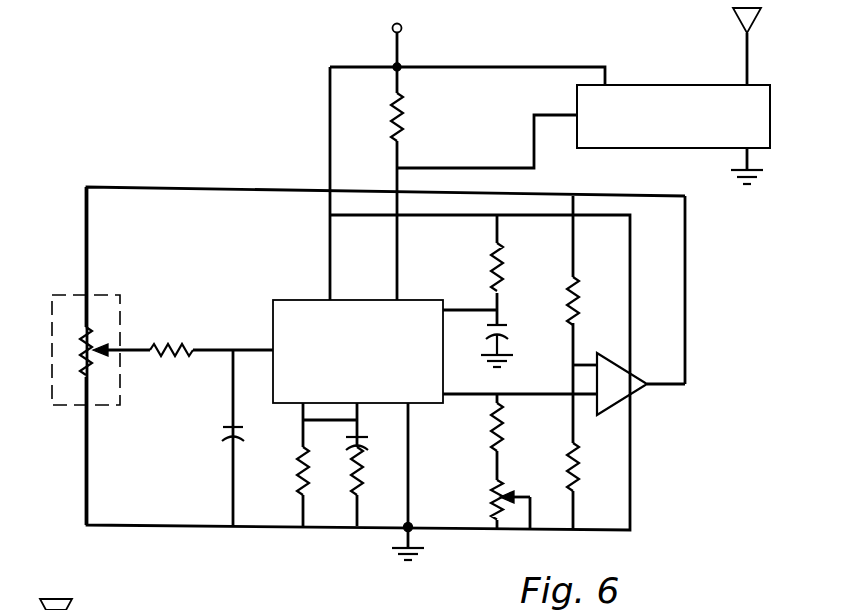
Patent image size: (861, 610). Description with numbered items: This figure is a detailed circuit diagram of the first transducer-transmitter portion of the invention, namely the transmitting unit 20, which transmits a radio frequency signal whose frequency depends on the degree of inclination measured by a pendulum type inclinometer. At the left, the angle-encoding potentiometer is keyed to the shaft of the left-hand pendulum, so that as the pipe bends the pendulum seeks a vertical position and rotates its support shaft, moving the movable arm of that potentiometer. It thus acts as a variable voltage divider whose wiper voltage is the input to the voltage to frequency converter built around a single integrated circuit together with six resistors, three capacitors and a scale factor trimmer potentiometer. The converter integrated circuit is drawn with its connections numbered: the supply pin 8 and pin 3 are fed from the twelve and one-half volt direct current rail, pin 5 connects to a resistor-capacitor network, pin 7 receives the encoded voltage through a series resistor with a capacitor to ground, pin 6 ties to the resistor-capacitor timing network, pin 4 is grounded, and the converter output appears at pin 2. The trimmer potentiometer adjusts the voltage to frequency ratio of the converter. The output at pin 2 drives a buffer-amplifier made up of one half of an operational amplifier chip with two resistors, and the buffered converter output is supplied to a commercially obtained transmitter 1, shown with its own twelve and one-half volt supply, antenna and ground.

The transmitting unit 20 is at (397, 307).
The transmitter 1 is at (673, 81).
The U1 output pin 2 is at (520, 386).
The U1 pin 3 is at (385, 258).
The U1 ground pin 4 is at (417, 465).
The U1 pin 5 is at (470, 297).
The U1 pin 6 is at (366, 415).
The U1 pin 7 is at (253, 339).
The U1 supply pin 8 is at (319, 184).